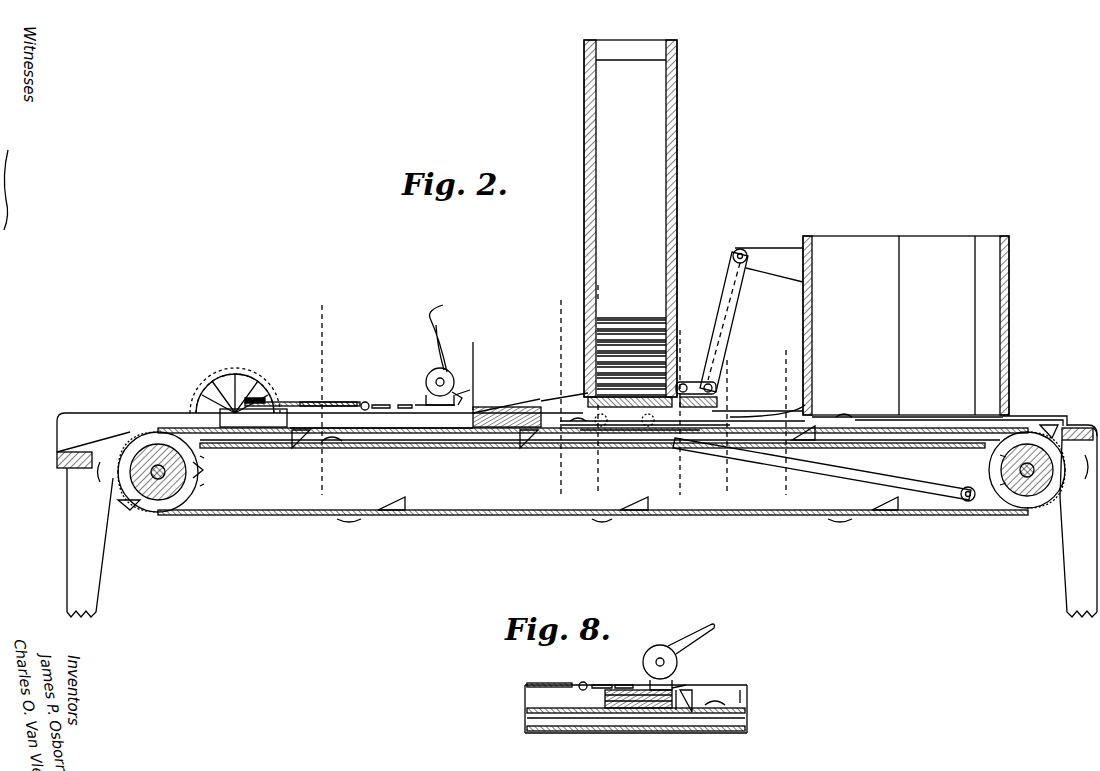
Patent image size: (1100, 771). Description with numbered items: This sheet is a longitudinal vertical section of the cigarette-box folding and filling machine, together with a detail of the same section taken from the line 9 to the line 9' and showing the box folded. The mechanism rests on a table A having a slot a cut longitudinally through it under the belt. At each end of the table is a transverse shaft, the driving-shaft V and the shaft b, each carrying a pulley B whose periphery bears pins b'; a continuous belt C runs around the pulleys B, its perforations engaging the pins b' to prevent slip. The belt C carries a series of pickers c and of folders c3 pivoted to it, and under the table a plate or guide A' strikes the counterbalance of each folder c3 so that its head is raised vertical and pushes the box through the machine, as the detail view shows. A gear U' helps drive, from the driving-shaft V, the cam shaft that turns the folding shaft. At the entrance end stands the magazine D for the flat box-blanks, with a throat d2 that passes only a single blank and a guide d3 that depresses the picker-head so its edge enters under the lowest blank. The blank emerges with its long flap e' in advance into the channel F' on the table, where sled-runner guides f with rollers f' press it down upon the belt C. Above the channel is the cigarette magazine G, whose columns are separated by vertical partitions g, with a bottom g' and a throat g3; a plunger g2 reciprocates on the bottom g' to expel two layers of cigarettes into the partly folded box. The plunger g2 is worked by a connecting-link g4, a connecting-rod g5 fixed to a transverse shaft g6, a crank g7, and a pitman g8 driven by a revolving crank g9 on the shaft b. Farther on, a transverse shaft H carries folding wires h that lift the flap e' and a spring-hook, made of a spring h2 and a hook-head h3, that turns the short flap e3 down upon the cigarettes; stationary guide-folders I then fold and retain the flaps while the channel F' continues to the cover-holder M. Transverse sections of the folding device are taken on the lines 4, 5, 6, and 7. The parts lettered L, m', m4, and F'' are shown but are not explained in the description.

In FIG. 2, the table A is at (577, 514).
In FIG. 2, the plate or guide A' is at (592, 456).
In FIG. 8, the plate or guide A' is at (636, 720).
In FIG. 2, the slot a is at (425, 448).
In FIG. 2, the pulley B is at (166, 500).
In FIG. 2, the transverse shaft b is at (615, 485).
In FIG. 2, the pins b' is at (599, 466).
In FIG. 2, the continuous belt C is at (468, 448).
In FIG. 8, the continuous belt C is at (576, 714).
In FIG. 2, the picker c is at (597, 463).
In FIG. 8, the picker c is at (722, 697).
In FIG. 2, the folder c3 is at (588, 473).
In FIG. 8, the folder c3 is at (689, 701).
In FIG. 2, the driving-shaft V is at (157, 470).
In FIG. 2, the gear U' is at (237, 392).
In FIG. 2, the feed stop m' is at (259, 372).
In FIG. 2, the feed plate m4 is at (295, 402).
In FIG. 2, the cover-holder M is at (337, 402).
In FIG. 8, the cover-holder M is at (556, 683).
In FIG. 2, the guide roller L is at (367, 402).
In FIG. 8, the guide roller L is at (585, 682).
In FIG. 2, the guide-folders I is at (399, 404).
In FIG. 8, the guide-folders I is at (621, 688).
In FIG. 2, the transverse shaft H is at (430, 376).
In FIG. 2, the folder rods or wires h is at (428, 327).
In FIG. 8, the folder rods or wires h is at (700, 635).
In FIG. 2, the spring h2 is at (462, 396).
In FIG. 8, the spring h2 is at (652, 679).
In FIG. 2, the hook-head h3 is at (470, 392).
In FIG. 8, the hook-head h3 is at (684, 686).
In FIG. 2, the long flap e' is at (481, 374).
In FIG. 2, the table section F'' is at (381, 419).
In FIG. 2, the channel F' is at (510, 397).
In FIG. 2, the short flap e3 is at (532, 400).
In FIG. 2, the throat g3 is at (590, 390).
In FIG. 2, the cigarette magazine G is at (637, 218).
In FIG. 2, the vertical partitions g is at (631, 298).
In FIG. 2, the plunger g2 is at (714, 394).
In FIG. 2, the connecting-link g4 is at (690, 384).
In FIG. 2, the connecting-rod g5 is at (732, 322).
In FIG. 2, the transverse shaft g6 is at (733, 255).
In FIG. 2, the crank g7 is at (722, 312).
In FIG. 2, the pitman g8 is at (835, 470).
In FIG. 2, the revolving crank g9 is at (961, 490).
In FIG. 2, the magazine bottom g' is at (628, 441).
In FIG. 2, the rollers f' is at (640, 449).
In FIG. 2, the sled-runner guide f is at (751, 442).
In FIG. 2, the blank magazine D is at (906, 325).
In FIG. 2, the throat d2 is at (852, 416).
In FIG. 2, the guide d3 is at (1018, 417).
In FIG. 2, the section line 4 4 is at (788, 418).
In FIG. 2, the section line 5 5 is at (735, 422).
In FIG. 2, the section line 6 6 is at (684, 417).
In FIG. 2, the section line 7 7 is at (602, 386).
In FIG. 2, the section line 9 9 is at (560, 399).
In FIG. 2, the section line 9' 9' is at (319, 399).